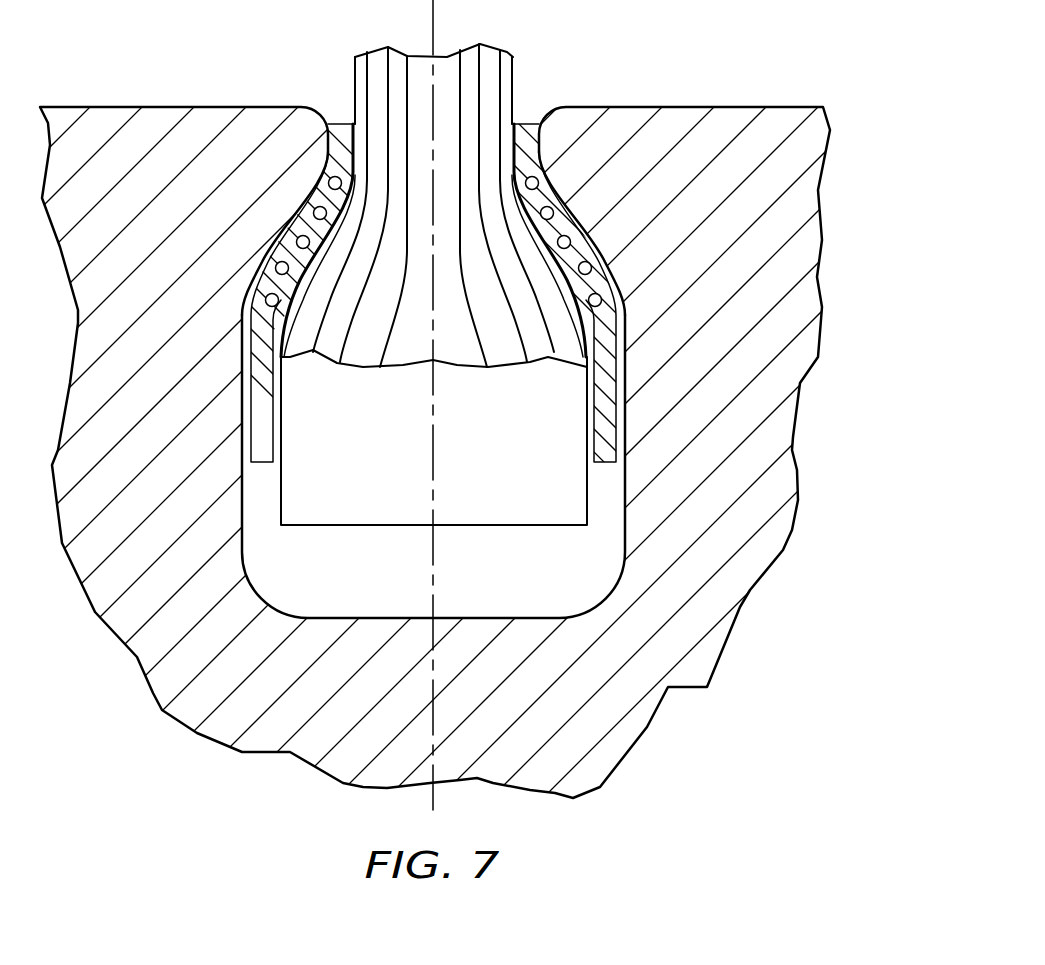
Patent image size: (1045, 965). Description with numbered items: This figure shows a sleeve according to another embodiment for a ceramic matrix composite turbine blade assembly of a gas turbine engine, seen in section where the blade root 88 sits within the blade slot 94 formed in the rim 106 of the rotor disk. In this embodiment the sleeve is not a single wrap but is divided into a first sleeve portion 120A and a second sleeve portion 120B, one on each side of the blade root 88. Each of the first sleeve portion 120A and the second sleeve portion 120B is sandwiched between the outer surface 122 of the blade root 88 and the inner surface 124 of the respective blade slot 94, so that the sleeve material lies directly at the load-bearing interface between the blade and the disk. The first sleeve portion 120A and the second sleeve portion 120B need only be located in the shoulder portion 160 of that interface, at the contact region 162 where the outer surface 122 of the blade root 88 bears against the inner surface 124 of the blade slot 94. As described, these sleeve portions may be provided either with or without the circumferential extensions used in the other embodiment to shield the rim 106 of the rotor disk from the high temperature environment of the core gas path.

The rim 106 is at (673, 107).
The contact region 162 is at (570, 209).
The shoulder portion 160 is at (530, 278).
The inner surface 124 is at (626, 330).
The outer surface 122 is at (578, 285).
The first sleeve portion 120A is at (262, 420).
The second sleeve portion 120B is at (605, 414).
The blade root 88 is at (378, 452).
The blade slot 94 is at (485, 590).